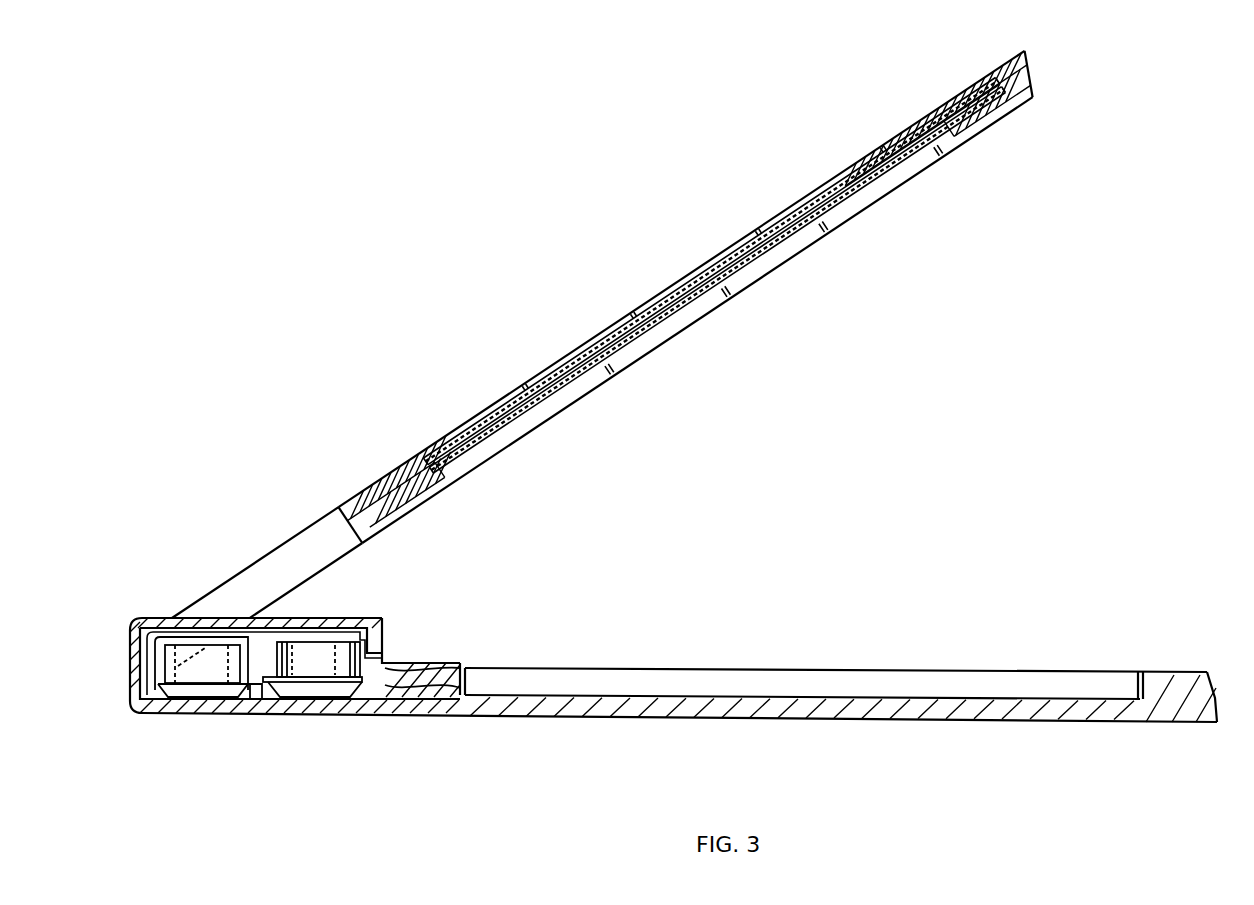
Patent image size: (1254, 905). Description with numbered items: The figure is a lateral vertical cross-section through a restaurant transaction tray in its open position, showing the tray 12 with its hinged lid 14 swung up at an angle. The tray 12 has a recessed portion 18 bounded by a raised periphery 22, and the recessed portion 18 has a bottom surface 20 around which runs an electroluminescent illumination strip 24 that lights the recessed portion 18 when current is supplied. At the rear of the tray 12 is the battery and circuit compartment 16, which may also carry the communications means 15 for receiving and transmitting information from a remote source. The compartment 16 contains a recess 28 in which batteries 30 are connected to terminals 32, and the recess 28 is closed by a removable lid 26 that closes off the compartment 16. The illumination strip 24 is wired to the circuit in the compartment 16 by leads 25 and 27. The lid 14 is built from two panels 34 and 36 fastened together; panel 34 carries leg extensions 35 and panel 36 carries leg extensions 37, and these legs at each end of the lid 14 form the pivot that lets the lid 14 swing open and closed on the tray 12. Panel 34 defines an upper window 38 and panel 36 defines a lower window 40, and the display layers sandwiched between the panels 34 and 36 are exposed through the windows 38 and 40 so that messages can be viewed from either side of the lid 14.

The tray 12 is at (640, 728).
The hinged lid 14 is at (728, 325).
The communications means 15 is at (258, 668).
The battery and circuit compartment 16 is at (118, 668).
The recessed portion 18 is at (690, 684).
The bottom surface 20 is at (855, 690).
The raised periphery 22 is at (1185, 672).
The illumination strip 24 is at (1133, 690).
The lead 25 is at (428, 687).
The removable lid 26 is at (362, 618).
The lead 27 is at (436, 662).
The recess 28 is at (165, 697).
The batteries 30 is at (322, 657).
The terminals 32 is at (215, 663).
The panel 34 is at (1033, 72).
The leg extensions 35 is at (262, 568).
The panel 36 is at (1036, 86).
The leg extensions 37 is at (347, 555).
The upper window 38 is at (840, 181).
The lower window 40 is at (930, 170).